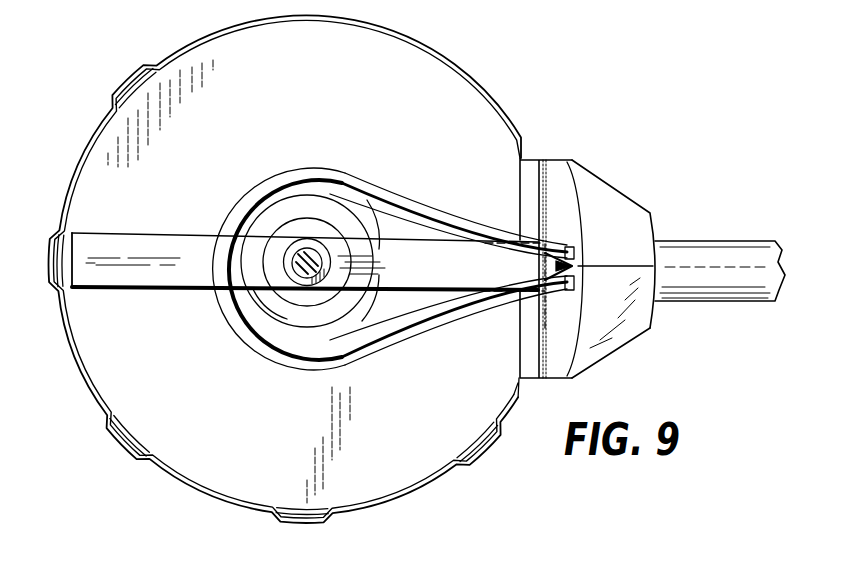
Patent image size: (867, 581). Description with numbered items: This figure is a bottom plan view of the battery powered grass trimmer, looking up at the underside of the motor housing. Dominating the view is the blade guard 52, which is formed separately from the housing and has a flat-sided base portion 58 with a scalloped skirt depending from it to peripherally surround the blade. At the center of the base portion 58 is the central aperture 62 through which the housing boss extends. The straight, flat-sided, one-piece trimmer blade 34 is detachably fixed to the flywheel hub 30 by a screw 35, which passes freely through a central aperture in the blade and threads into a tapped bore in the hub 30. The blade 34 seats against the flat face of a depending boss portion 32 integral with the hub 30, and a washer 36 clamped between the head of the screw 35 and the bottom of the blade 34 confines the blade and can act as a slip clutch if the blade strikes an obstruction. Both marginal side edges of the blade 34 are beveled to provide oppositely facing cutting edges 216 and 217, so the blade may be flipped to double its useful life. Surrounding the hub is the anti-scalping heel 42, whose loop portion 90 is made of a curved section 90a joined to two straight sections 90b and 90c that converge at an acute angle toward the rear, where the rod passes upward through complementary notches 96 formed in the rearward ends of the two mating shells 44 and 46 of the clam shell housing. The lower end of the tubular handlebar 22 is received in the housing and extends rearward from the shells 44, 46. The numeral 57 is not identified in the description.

The tubular handlebar 22 is at (733, 241).
The flywheel hub 30 is at (300, 306).
The boss portion 32 is at (327, 217).
The trimmer blade 34 is at (151, 290).
The screw 35 is at (295, 259).
The washer 36 is at (333, 265).
The anti-scalping heel 42 is at (387, 179).
The shell 44 is at (612, 348).
The shell 46 is at (621, 197).
The blade guard 52 is at (421, 45).
The pulley flange 57 is at (268, 310).
The base portion 58 is at (393, 111).
The central aperture 62 is at (377, 302).
The loop portion 90 is at (283, 172).
The curved section 90a is at (229, 216).
The straight section 90b is at (478, 222).
The straight section 90c is at (449, 326).
The notches 96 is at (577, 257).
The cutting edge 216 is at (117, 291).
The cutting edge 217 is at (141, 233).